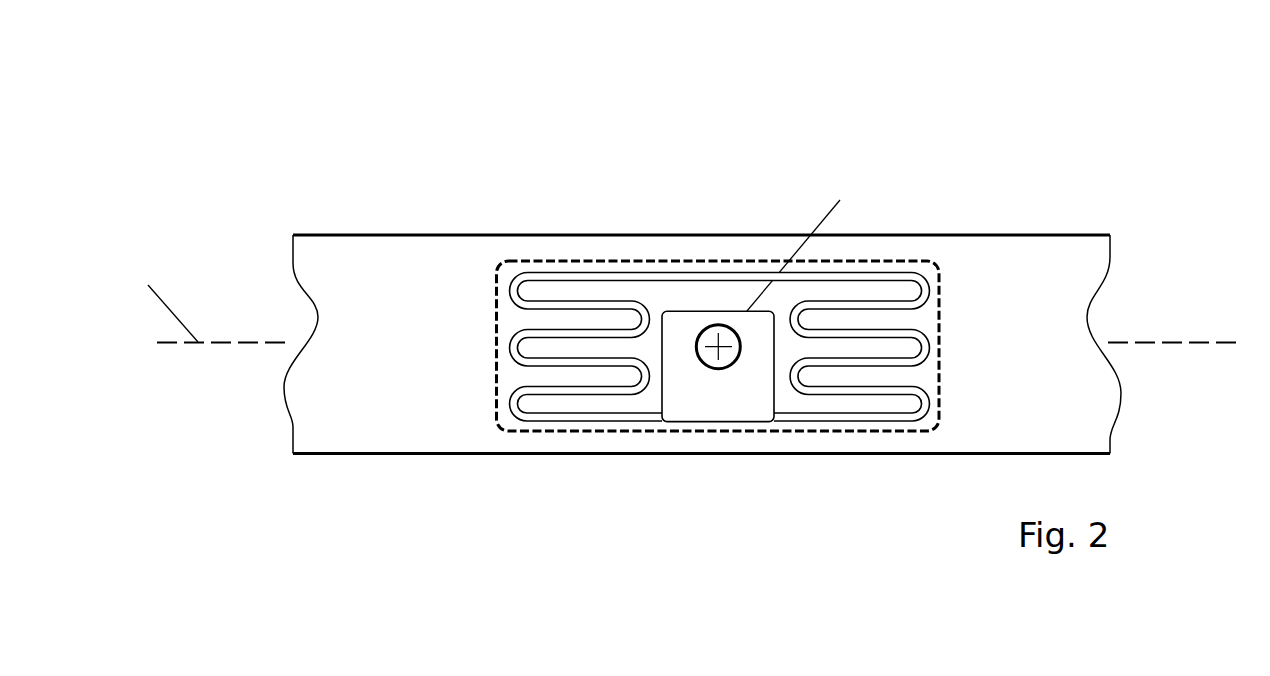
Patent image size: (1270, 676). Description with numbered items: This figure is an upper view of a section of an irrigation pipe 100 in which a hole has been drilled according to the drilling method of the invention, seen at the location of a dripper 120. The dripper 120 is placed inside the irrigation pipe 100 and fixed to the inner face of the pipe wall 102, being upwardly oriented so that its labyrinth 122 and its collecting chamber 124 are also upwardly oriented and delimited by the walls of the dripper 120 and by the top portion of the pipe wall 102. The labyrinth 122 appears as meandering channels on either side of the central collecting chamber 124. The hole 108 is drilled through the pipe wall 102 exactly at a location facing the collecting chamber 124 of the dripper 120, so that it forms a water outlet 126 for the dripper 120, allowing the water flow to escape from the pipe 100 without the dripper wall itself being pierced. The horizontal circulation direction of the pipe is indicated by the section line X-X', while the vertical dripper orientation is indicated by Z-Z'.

The irrigation pipe 100 is at (343, 108).
The pipe wall 102 is at (1043, 234).
The hole 108 is at (728, 365).
The dripper 120 is at (527, 435).
The labyrinth 122 is at (615, 387).
The collecting chamber 124 is at (723, 395).
The water outlet 126 is at (712, 342).